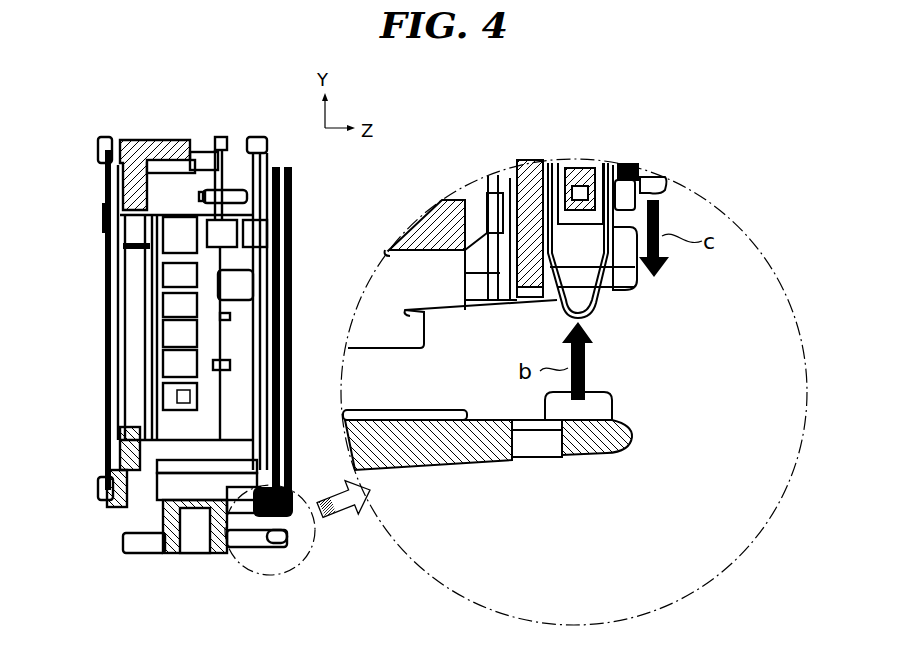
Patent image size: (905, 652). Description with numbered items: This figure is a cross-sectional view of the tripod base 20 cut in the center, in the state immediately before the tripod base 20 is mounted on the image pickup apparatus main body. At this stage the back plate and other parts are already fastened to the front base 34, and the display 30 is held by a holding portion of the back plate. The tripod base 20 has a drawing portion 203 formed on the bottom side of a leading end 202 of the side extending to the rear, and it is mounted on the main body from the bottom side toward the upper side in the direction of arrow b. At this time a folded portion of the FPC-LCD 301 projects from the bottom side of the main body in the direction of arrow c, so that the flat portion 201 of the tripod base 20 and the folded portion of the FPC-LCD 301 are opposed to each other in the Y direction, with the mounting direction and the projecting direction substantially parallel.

The tripod base 20 is at (147, 545).
The display 30 is at (290, 216).
The front base 34 is at (152, 493).
The flat portion 201 is at (600, 410).
The leading end 202 is at (637, 427).
The drawing portion 203 is at (620, 453).
The FPC-LCD 301 is at (628, 278).